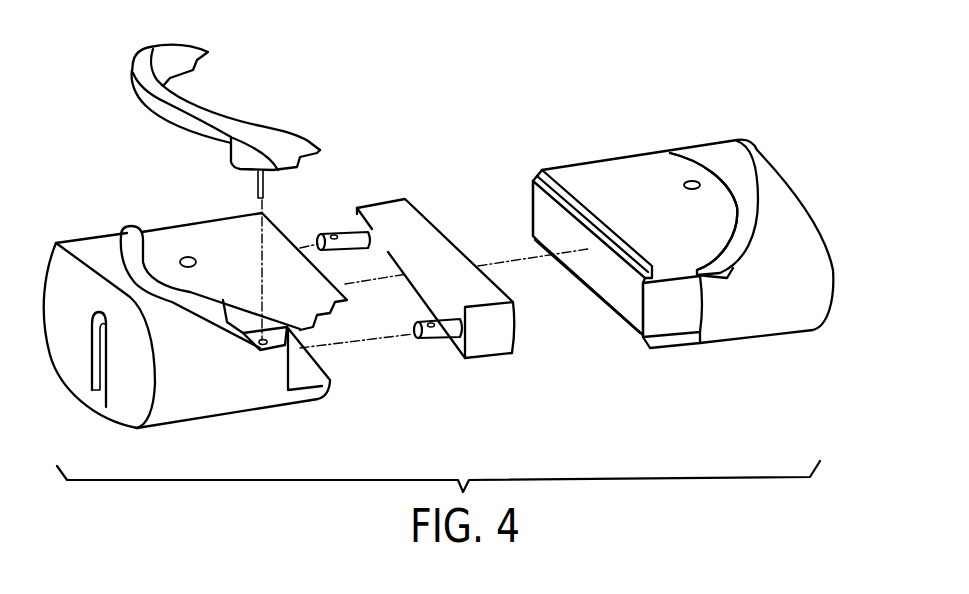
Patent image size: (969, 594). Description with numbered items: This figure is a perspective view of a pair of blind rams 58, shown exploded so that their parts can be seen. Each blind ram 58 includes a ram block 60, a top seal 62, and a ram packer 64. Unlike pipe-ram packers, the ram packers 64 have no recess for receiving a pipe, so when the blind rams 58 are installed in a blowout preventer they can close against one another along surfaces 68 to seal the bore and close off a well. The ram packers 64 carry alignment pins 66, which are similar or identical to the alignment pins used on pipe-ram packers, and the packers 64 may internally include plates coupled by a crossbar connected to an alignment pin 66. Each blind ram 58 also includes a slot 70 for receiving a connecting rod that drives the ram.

The blind ram 58 is at (114, 93).
The ram block 60 is at (58, 262).
The top seal 62 is at (175, 44).
The ram packer 64 is at (485, 350).
The alignment pin 66 is at (344, 230).
The surface 68 is at (625, 283).
The slot 70 is at (100, 397).